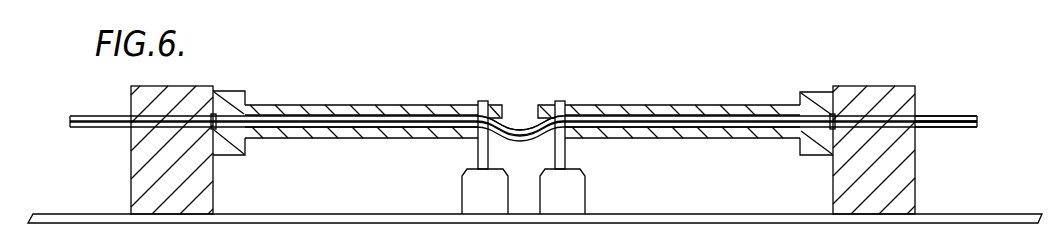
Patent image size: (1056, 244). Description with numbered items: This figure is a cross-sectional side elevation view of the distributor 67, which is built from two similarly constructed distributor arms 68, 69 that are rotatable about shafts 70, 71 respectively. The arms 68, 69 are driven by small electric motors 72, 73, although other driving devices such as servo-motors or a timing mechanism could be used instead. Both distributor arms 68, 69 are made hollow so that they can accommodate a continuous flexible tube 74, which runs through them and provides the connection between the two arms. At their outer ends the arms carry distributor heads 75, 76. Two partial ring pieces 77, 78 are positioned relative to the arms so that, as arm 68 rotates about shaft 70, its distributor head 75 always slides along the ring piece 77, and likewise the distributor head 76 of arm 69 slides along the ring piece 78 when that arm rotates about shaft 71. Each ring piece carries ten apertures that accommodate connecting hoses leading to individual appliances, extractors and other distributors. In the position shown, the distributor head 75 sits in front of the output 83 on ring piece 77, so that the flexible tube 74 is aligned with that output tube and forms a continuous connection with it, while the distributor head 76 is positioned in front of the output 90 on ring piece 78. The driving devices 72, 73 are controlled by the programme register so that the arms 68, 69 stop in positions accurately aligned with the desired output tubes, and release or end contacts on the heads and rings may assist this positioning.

The distributor 67 is at (609, 103).
The distributor arm 68 is at (356, 105).
The distributor arm 69 is at (716, 105).
The shaft 70 is at (478, 150).
The shaft 71 is at (565, 152).
The electric motor 72 is at (467, 197).
The electric motor 73 is at (579, 193).
The flexible tube 74 is at (517, 127).
The distributor head 75 is at (247, 96).
The distributor head 76 is at (808, 92).
The partial ring piece 77 is at (130, 172).
The partial ring piece 78 is at (915, 160).
The output 83 is at (70, 120).
The output 90 is at (974, 103).